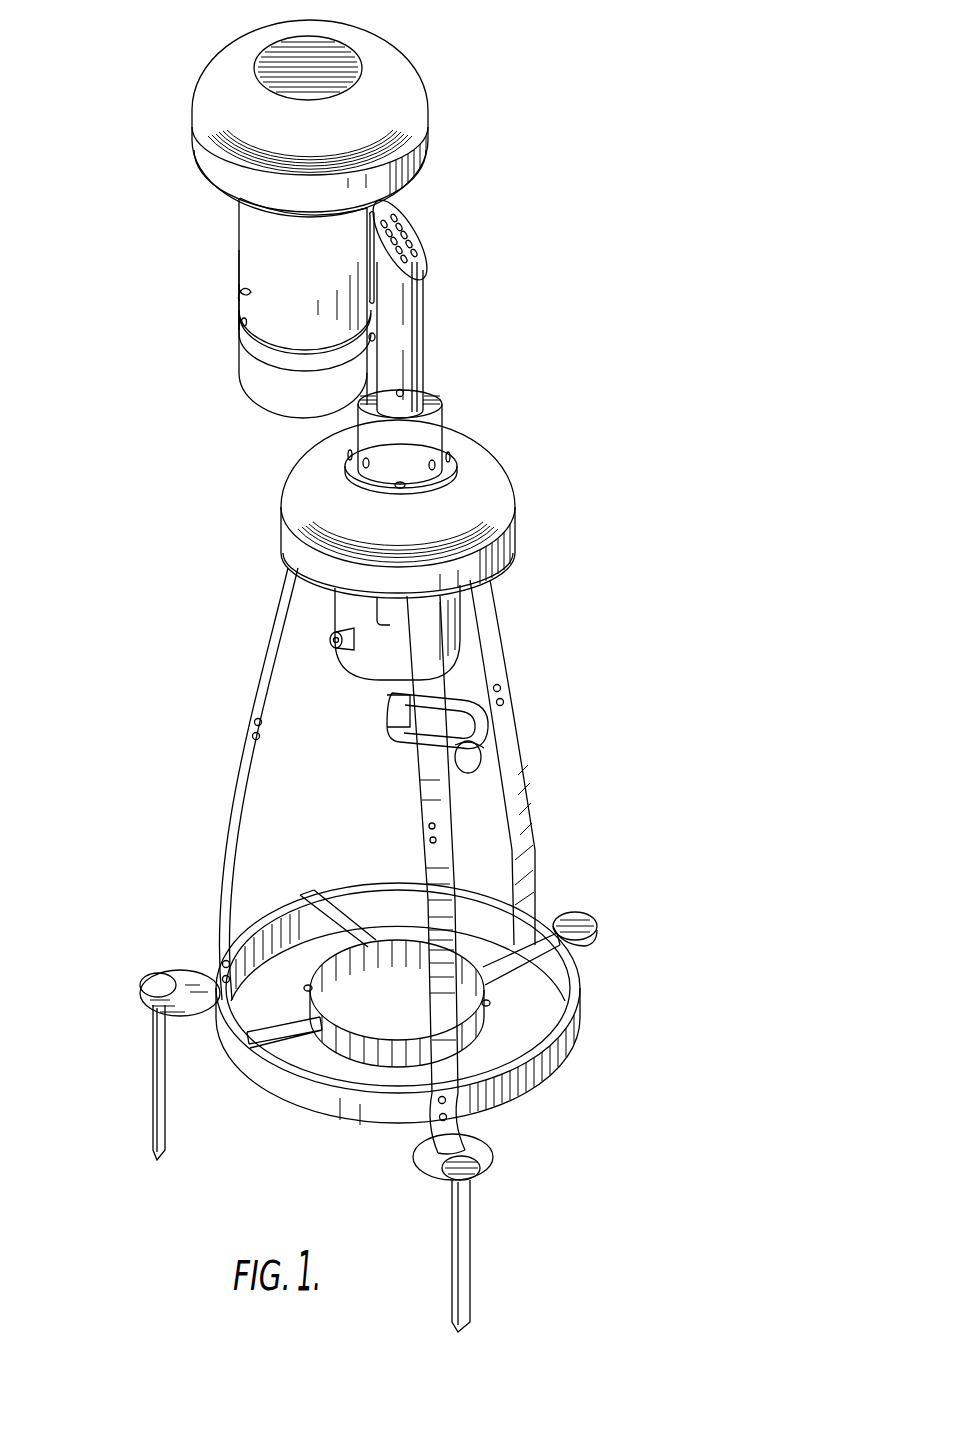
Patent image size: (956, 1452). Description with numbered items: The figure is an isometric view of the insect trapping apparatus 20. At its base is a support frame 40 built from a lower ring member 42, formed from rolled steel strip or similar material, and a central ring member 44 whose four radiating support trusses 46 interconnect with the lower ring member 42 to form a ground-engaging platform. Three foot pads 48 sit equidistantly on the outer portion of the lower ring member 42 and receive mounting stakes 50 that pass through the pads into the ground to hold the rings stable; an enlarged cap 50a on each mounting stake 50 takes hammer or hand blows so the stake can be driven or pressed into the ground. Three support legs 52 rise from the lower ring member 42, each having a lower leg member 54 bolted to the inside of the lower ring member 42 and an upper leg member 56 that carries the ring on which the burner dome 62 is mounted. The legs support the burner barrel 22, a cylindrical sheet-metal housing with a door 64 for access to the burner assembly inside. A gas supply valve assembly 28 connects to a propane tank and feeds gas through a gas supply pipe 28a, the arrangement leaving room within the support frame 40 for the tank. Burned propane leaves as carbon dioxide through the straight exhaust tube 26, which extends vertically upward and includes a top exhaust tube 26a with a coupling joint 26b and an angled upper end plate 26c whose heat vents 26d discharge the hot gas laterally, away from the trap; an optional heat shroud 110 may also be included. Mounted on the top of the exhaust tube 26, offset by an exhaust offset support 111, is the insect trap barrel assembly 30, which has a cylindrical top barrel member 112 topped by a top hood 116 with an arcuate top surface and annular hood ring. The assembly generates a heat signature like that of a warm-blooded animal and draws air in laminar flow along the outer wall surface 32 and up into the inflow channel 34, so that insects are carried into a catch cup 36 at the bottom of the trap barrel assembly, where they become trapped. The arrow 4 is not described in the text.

The direction arrow 4 is at (368, 713).
The insect trapping apparatus 20 is at (577, 203).
The burner barrel 22 is at (375, 668).
The exhaust tube 26 is at (397, 338).
The top exhaust tube 26a is at (410, 392).
The coupling joint 26b is at (438, 402).
The upper end plate 26c is at (405, 228).
The heat vents 26d is at (420, 247).
The gas supply valve assembly 28 is at (472, 760).
The gas supply pipe 28a is at (462, 702).
The insect trap barrel assembly 30 is at (260, 272).
The outer wall surface 32 is at (248, 292).
The inflow channel 34 is at (260, 211).
The catch cup 36 is at (250, 375).
The support frame 40 is at (607, 747).
The lower ring member 42 is at (535, 1077).
The central ring member 44 is at (358, 890).
The support trusses 46 is at (325, 880).
The foot pads 48 is at (183, 975).
The mounting stakes 50 is at (153, 1076).
The enlarged cap 50a is at (152, 983).
The support legs 52 is at (226, 790).
The lower leg member 54 is at (522, 875).
The upper leg member 56 is at (500, 628).
The burner dome 62 is at (508, 490).
The door 64 is at (350, 612).
The heat shroud 110 is at (433, 442).
The exhaust offset support 111 is at (402, 218).
The top barrel member 112 is at (327, 263).
The top hood 116 is at (400, 91).